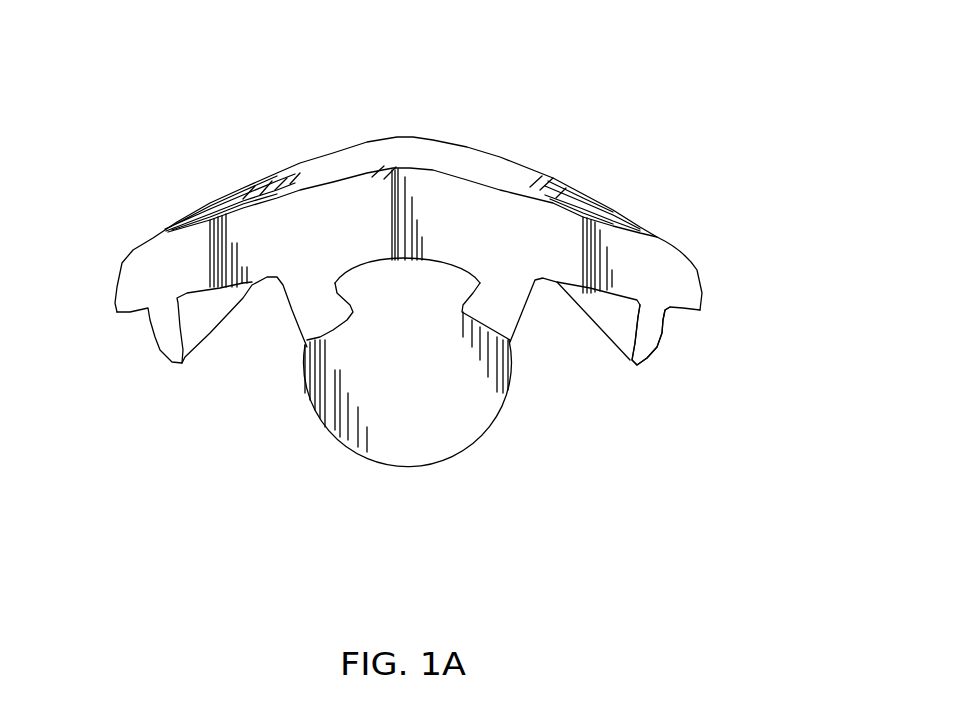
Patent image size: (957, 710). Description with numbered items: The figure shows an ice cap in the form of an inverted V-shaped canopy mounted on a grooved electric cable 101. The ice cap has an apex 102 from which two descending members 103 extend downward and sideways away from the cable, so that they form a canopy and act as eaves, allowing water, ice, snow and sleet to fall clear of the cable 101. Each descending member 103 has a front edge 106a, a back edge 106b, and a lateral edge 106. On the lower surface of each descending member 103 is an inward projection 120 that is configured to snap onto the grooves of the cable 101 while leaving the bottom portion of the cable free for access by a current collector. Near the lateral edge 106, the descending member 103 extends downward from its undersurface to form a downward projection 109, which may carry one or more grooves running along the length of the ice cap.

The grooved electric cable 101 is at (438, 433).
The apex 102 is at (407, 152).
The descending members 103 is at (188, 186).
The lateral edge 106 is at (702, 293).
The front edge 106a is at (533, 240).
The back edge 106b is at (493, 152).
The downward projection 109 is at (667, 333).
The inward projection 120 is at (492, 294).